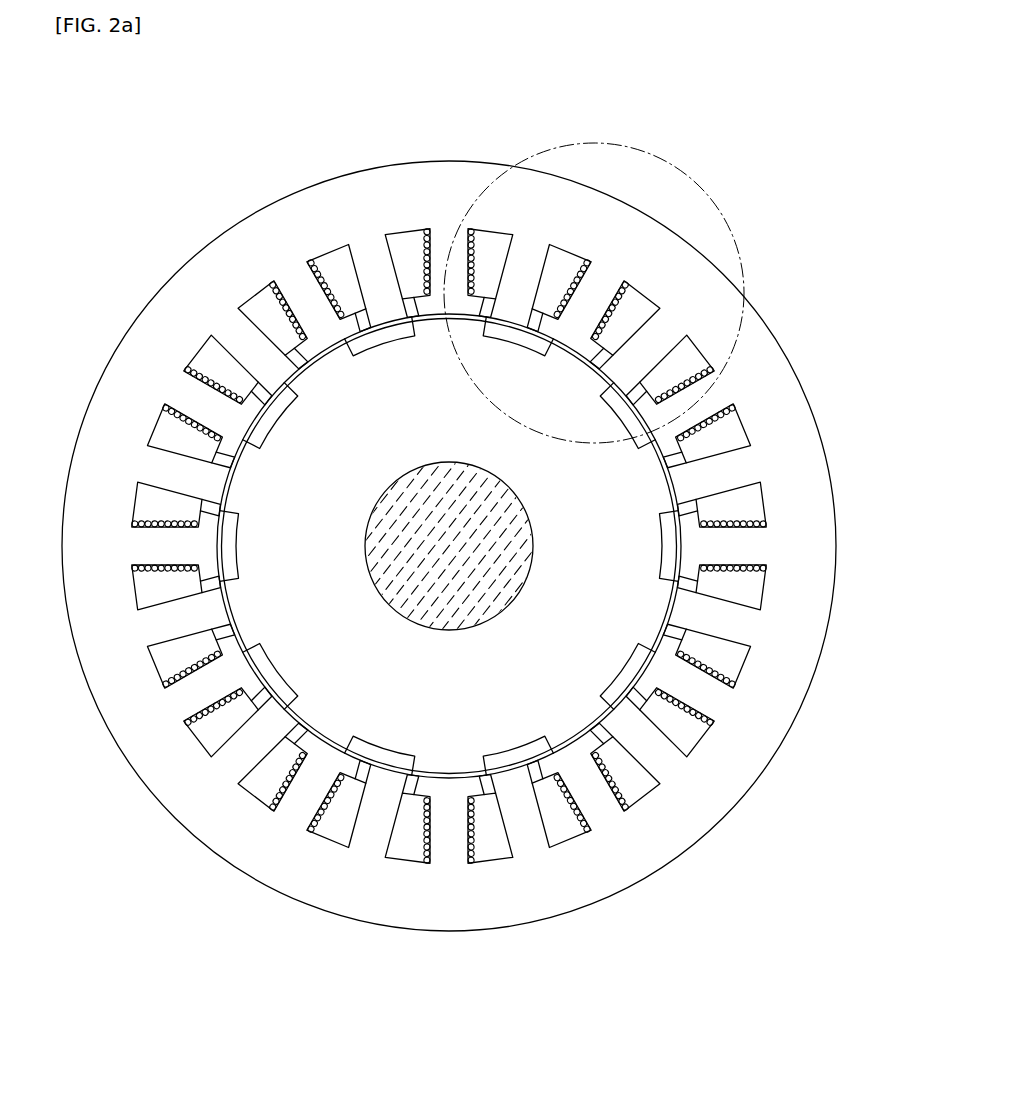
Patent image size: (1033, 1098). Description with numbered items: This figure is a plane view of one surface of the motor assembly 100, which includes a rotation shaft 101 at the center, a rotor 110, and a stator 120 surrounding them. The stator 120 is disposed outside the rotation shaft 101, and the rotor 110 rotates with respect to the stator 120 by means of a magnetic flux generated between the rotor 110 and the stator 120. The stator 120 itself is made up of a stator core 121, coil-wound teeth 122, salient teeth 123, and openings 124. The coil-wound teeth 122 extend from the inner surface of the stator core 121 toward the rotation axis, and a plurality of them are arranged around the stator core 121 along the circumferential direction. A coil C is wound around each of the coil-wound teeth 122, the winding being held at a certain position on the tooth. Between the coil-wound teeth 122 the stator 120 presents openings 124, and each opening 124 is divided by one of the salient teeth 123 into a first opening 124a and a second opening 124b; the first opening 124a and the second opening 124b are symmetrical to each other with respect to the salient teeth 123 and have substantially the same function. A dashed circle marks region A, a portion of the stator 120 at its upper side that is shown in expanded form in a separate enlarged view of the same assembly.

The motor assembly 100 is at (145, 170).
The rotation shaft 101 is at (430, 598).
The rotor 110 is at (343, 688).
The stator 120 is at (302, 862).
The stator core 121 is at (733, 769).
The coil-wound teeth 122 is at (607, 810).
The salient teeth 123 is at (667, 762).
The openings 124 is at (612, 968).
The first opening 124a is at (495, 852).
The second opening 124b is at (560, 845).
The coil C is at (467, 863).
The region A is at (595, 142).